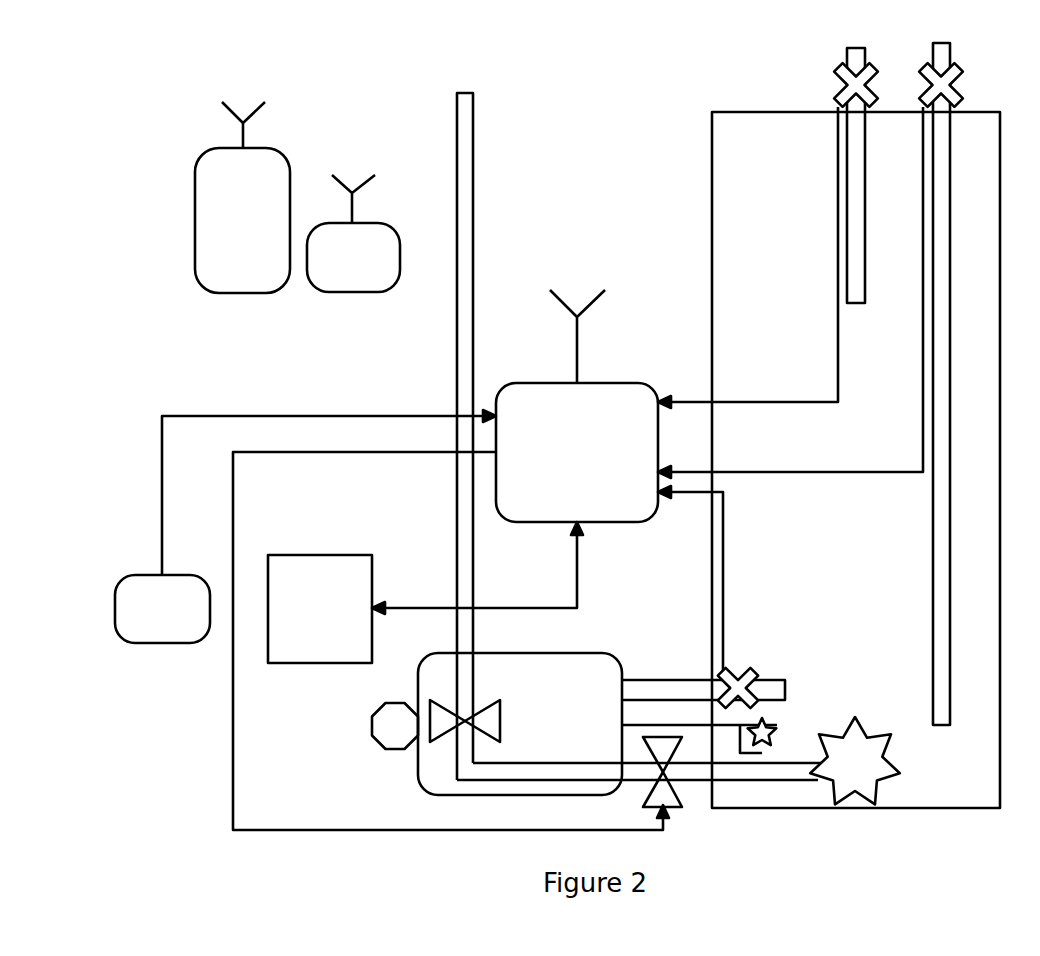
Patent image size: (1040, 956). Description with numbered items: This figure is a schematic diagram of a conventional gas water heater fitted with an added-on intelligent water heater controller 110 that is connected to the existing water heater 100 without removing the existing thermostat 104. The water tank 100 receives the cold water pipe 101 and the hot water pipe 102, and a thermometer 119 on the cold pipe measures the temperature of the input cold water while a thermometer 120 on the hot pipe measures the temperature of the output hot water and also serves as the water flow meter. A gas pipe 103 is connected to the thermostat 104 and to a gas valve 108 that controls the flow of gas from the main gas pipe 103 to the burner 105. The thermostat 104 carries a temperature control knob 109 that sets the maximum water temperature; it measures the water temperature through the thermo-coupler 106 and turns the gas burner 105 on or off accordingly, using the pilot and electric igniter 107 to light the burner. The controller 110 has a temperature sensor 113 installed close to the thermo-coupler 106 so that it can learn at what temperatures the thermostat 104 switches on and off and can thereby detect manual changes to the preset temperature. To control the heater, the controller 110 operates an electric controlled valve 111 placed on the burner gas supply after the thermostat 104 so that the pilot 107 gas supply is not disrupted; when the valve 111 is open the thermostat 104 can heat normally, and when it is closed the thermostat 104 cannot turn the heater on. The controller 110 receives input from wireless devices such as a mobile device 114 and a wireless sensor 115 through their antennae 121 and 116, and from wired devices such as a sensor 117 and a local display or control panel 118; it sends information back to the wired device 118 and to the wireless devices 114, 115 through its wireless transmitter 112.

The water tank 100 is at (856, 460).
The cold water pipe 101 is at (831, 367).
The hot water pipe 102 is at (768, 210).
The gas pipe 103 is at (458, 418).
The thermostat 104 is at (520, 724).
The gas burner 105 is at (679, 747).
The thermo-coupler 106 is at (703, 676).
The pilot and electric igniter 107 is at (717, 729).
The gas valve 108 is at (487, 721).
The temperature control knob 109 is at (371, 726).
The intelligent water heater controller 110 is at (577, 452).
The electric controlled valve 111 is at (481, 649).
The wireless transmitter 112 is at (577, 321).
The temperature sensor 113 is at (712, 597).
The wireless device 114 is at (242, 220).
The wireless device 115 is at (353, 257).
The antenna 116 is at (353, 185).
The wired device 117 is at (305, 526).
The wired device 118 is at (425, 592).
The thermometer 119 is at (961, 85).
The thermometer 120 is at (827, 77).
The antenna 121 is at (243, 110).